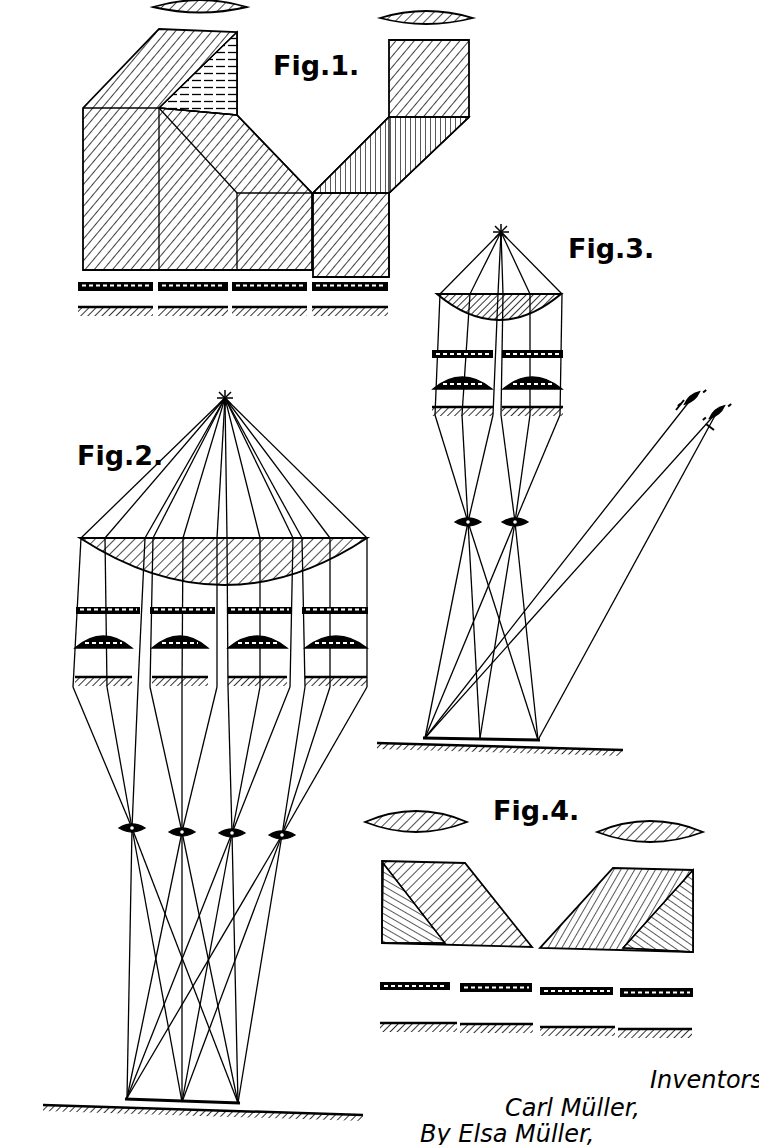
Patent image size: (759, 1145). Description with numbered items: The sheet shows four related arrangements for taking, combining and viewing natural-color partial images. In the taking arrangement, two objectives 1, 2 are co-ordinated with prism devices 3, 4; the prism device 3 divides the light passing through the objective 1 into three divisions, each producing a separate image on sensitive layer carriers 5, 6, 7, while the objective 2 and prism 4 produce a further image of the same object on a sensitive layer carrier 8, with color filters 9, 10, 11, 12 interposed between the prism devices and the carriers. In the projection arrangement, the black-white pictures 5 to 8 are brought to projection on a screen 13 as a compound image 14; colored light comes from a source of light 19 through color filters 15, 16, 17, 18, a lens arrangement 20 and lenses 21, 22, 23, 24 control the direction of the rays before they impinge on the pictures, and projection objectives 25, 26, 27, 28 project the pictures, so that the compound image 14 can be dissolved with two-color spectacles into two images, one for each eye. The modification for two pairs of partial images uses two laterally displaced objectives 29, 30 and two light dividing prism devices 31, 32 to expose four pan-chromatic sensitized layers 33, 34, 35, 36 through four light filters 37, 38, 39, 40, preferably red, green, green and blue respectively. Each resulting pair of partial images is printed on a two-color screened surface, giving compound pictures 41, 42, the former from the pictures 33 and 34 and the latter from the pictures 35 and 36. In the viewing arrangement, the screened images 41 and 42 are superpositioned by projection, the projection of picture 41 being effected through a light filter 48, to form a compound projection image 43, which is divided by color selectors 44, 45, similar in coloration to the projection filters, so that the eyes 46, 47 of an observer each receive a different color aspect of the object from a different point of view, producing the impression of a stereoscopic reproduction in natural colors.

In FIG. 1, the objective 1 is at (150, 8).
In FIG. 1, the objective 2 is at (380, 20).
In FIG. 1, the prism device 3 is at (183, 155).
In FIG. 1, the prism device 4 is at (403, 143).
In FIG. 1, the sensitive layer carrier 5 is at (135, 316).
In FIG. 2, the sensitive layer carrier 5 is at (108, 705).
In FIG. 1, the sensitive layer carrier 6 is at (208, 316).
In FIG. 2, the sensitive layer carrier 6 is at (182, 705).
In FIG. 1, the sensitive layer carrier 7 is at (253, 316).
In FIG. 2, the sensitive layer carrier 7 is at (253, 700).
In FIG. 1, the sensitive layer carrier 8 is at (342, 316).
In FIG. 2, the sensitive layer carrier 8 is at (332, 698).
In FIG. 1, the color filter 9 is at (107, 291).
In FIG. 1, the color filter 10 is at (182, 291).
In FIG. 1, the color filter 11 is at (278, 291).
In FIG. 1, the color filter 12 is at (362, 291).
In FIG. 2, the screen 13 is at (77, 1105).
In FIG. 2, the compound image 14 is at (210, 1100).
In FIG. 2, the color filter 15 is at (90, 607).
In FIG. 2, the color filter 16 is at (175, 610).
In FIG. 2, the color filter 17 is at (248, 612).
In FIG. 2, the color filter 18 is at (320, 612).
In FIG. 2, the source of light 19 is at (221, 401).
In FIG. 2, the lens arrangement 20 is at (257, 560).
In FIG. 2, the lens 21 is at (105, 647).
In FIG. 2, the lens 22 is at (180, 648).
In FIG. 2, the lens 23 is at (257, 648).
In FIG. 2, the lens 24 is at (337, 648).
In FIG. 2, the projection objective 25 is at (130, 837).
In FIG. 2, the projection objective 26 is at (178, 840).
In FIG. 2, the projection objective 27 is at (227, 840).
In FIG. 2, the projection objective 28 is at (277, 840).
In FIG. 4, the objective 29 is at (382, 830).
In FIG. 4, the objective 30 is at (685, 823).
In FIG. 4, the light dividing prism device 31 is at (430, 897).
In FIG. 4, the light dividing prism device 32 is at (620, 908).
In FIG. 4, the pan-chromatic sensitized layer 33 is at (422, 1035).
In FIG. 4, the pan-chromatic sensitized layer 34 is at (497, 1035).
In FIG. 4, the pan-chromatic sensitized layer 35 is at (560, 1037).
In FIG. 4, the pan-chromatic sensitized layer 36 is at (670, 1040).
In FIG. 4, the light filter 37 is at (420, 982).
In FIG. 4, the light filter 38 is at (497, 983).
In FIG. 4, the light filter 39 is at (583, 988).
In FIG. 4, the light filter 40 is at (663, 990).
In FIG. 3, the compound picture 41 is at (448, 415).
In FIG. 3, the compound picture 42 is at (542, 415).
In FIG. 3, the compound projection image 43 is at (520, 738).
In FIG. 3, the color selector 44 is at (680, 407).
In FIG. 3, the color selector 45 is at (707, 425).
In FIG. 3, the eye 46 is at (694, 390).
In FIG. 3, the eye 47 is at (547, 360).
In FIG. 3, the light filter 48 is at (447, 358).